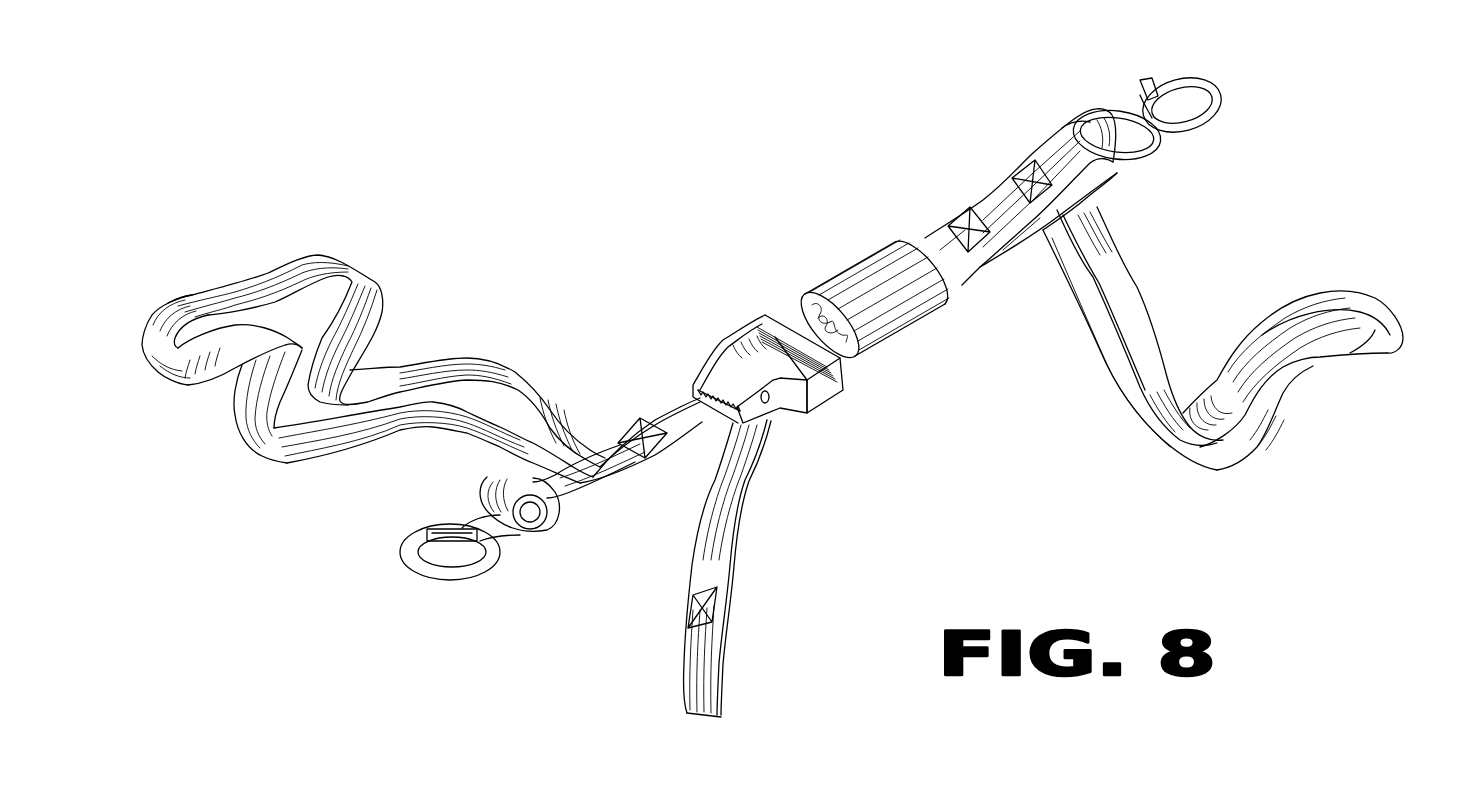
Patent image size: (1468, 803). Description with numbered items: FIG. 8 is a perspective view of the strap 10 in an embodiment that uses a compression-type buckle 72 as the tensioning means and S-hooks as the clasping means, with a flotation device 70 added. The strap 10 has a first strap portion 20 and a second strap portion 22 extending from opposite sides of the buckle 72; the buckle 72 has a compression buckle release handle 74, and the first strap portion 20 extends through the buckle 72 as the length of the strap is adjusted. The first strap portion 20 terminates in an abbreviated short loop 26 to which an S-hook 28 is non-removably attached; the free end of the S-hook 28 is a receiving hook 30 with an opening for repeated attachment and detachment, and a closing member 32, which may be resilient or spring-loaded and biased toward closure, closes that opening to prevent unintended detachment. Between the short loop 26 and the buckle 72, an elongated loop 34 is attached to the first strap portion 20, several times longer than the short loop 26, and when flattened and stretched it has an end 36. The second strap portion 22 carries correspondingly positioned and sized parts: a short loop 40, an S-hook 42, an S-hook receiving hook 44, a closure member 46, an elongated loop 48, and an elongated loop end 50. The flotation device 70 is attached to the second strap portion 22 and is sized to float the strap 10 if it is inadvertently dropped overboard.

The strap 10 is at (766, 228).
The first strap portion 20 is at (745, 545).
The second strap portion 22 is at (932, 228).
The short loop 26 is at (565, 528).
The S-hook 28 is at (513, 545).
The receiving hook 30 is at (462, 585).
The closing member 32 is at (447, 527).
The elongated loop 34 is at (339, 262).
The elongated loop end 36 is at (192, 293).
The short loop 40 is at (1120, 178).
The S-hook 42 is at (1080, 122).
The S-hook receiving hook 44 is at (1222, 101).
The closure member 46 is at (1152, 82).
The elongated loop 48 is at (1222, 470).
The elongated loop end 50 is at (1377, 306).
The flotation device 70 is at (800, 300).
The compression-type buckle 72 is at (800, 418).
The compression buckle release handle 74 is at (782, 417).